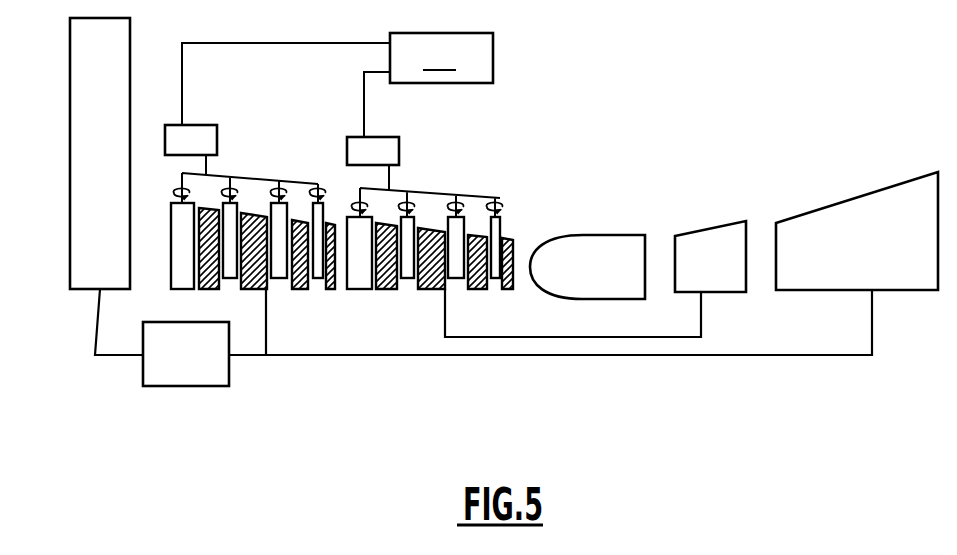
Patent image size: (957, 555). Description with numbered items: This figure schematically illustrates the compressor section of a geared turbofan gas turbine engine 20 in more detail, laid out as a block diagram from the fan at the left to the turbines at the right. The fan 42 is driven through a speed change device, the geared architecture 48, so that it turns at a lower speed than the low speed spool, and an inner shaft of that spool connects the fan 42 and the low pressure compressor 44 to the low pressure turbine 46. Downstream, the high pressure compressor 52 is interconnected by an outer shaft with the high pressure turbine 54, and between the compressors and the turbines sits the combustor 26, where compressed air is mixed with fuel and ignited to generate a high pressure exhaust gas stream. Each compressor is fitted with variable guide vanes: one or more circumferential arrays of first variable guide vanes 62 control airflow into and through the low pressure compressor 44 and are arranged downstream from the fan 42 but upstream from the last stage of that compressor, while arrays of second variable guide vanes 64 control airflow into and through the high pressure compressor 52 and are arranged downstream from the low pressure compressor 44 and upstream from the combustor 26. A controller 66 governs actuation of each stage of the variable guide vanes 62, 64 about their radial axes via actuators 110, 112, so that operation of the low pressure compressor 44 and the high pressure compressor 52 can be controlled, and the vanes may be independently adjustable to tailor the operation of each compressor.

The gas turbine engine 20 is at (772, 53).
The combustor section 26 is at (597, 245).
The fan 42 is at (88, 268).
The low pressure compressor section 44 is at (294, 310).
The low pressure turbine section 46 is at (864, 210).
The geared architecture 48 is at (178, 373).
The high pressure compressor section 52 is at (428, 313).
The high pressure turbine section 54 is at (710, 238).
The first variable guide vanes 62 is at (246, 150).
The second variable guide vanes 64 is at (464, 164).
The controller 66 is at (441, 58).
The actuator 110 is at (194, 140).
The actuator 112 is at (376, 153).